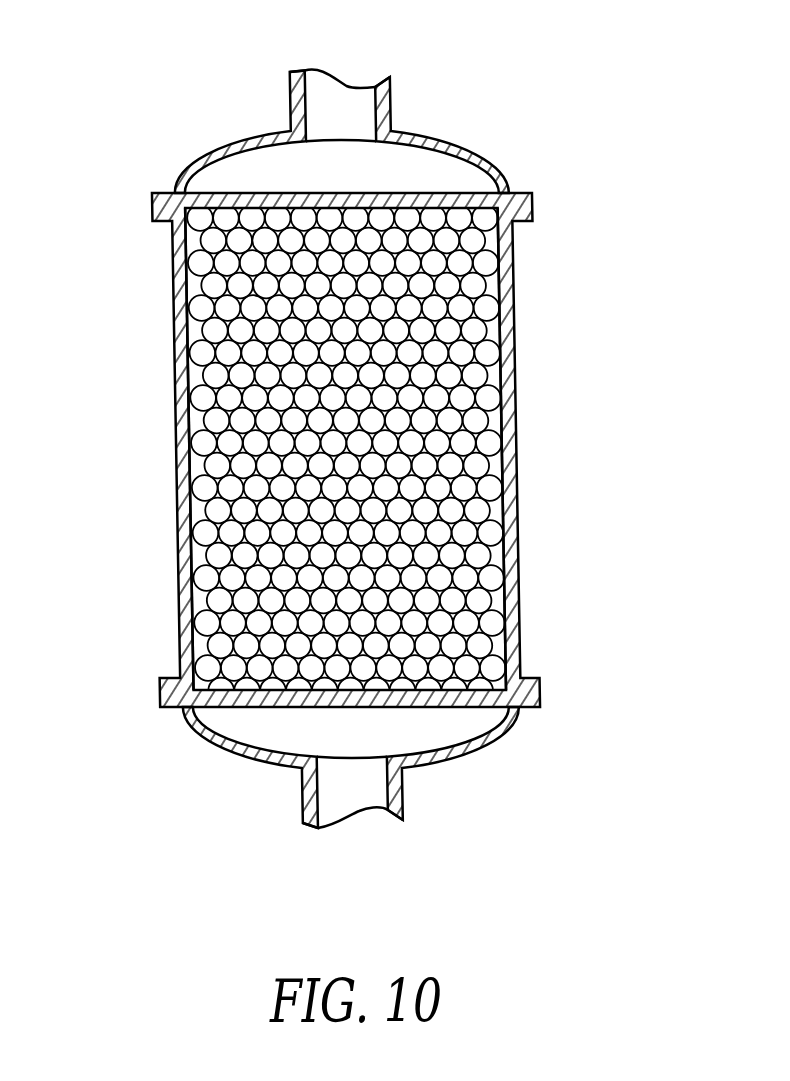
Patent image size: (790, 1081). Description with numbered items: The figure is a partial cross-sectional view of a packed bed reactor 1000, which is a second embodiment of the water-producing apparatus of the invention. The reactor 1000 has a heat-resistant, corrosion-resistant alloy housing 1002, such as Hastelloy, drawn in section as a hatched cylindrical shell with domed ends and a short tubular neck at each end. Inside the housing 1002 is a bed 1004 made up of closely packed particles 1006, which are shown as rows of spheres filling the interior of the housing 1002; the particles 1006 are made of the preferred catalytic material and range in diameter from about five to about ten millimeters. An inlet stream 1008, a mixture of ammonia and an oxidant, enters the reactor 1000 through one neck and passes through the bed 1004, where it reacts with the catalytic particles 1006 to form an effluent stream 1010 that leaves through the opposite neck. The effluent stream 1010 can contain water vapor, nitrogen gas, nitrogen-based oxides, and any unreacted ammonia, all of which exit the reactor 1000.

The packed bed reactor 1000 is at (520, 100).
The housing 1002 is at (511, 445).
The bed 1004 is at (197, 367).
The particles 1006 is at (207, 492).
The inlet stream 1008 is at (358, 805).
The effluent stream 1010 is at (342, 112).